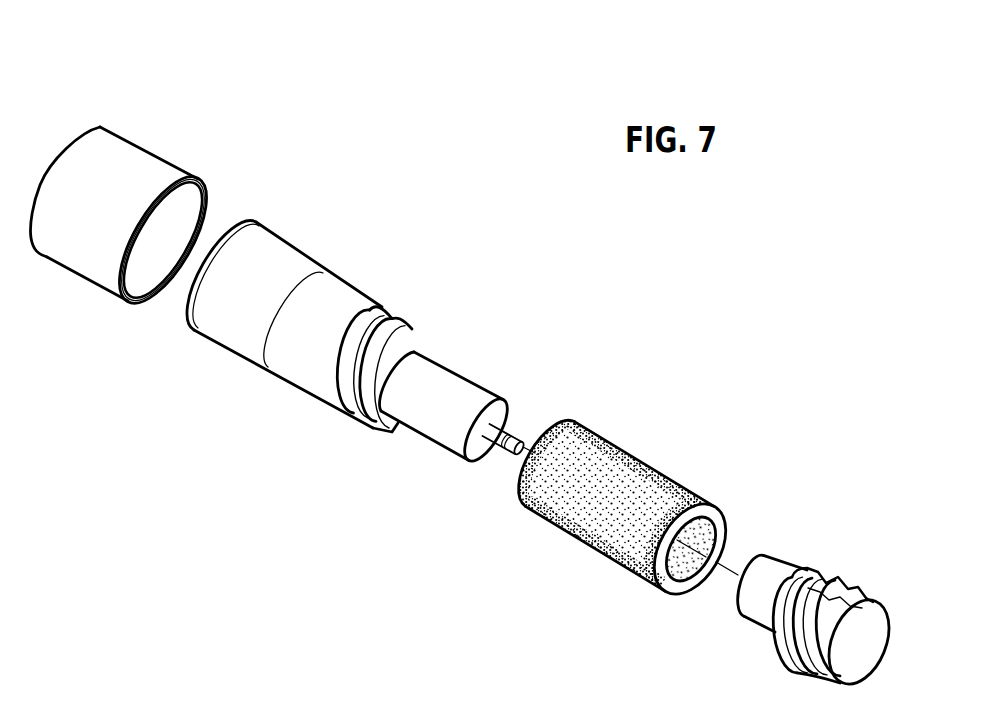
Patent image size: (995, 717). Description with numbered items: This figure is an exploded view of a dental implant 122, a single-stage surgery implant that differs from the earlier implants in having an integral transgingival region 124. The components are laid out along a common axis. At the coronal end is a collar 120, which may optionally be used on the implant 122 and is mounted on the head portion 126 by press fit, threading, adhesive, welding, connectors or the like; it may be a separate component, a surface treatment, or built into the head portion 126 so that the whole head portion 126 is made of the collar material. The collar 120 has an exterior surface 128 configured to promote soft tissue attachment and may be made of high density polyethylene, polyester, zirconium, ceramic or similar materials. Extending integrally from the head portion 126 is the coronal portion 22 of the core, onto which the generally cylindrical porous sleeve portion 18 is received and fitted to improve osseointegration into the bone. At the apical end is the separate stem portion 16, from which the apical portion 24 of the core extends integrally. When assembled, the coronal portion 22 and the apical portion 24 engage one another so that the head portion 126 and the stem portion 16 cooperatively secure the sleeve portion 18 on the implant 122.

The collar 120 is at (92, 142).
The exterior surface 128 is at (77, 273).
The integral transgingival region 124 is at (233, 357).
The head portion 126 is at (337, 278).
The coronal portion 22 is at (455, 380).
The implant 122 is at (580, 298).
The sleeve portion 18 is at (677, 480).
The apical portion 24 is at (772, 565).
The stem portion 16 is at (857, 580).